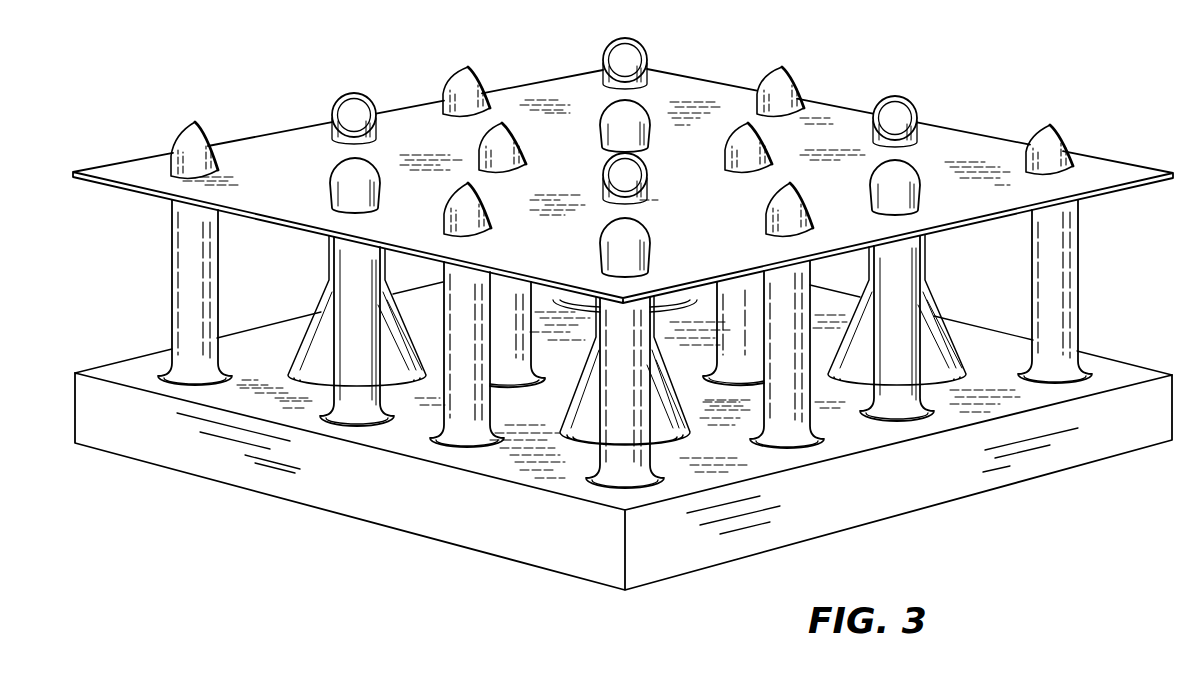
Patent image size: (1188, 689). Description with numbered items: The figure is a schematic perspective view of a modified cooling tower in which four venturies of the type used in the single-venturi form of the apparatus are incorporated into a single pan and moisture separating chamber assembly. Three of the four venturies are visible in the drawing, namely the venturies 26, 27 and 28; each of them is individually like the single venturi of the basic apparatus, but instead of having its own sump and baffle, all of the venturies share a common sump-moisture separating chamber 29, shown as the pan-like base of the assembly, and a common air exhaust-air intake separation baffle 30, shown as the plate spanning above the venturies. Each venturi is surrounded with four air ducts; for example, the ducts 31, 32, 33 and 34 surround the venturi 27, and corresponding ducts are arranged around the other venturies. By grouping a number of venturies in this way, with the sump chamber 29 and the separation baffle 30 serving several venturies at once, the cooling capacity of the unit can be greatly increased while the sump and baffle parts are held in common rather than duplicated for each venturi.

The venturi 26 is at (323, 340).
The venturi 27 is at (578, 398).
The venturi 28 is at (928, 345).
The common sump-moisture separating chamber 29 is at (917, 495).
The common air exhaust-air intake separation baffle 30 is at (698, 95).
The air duct 31 is at (457, 327).
The air duct 32 is at (650, 173).
The air duct 33 is at (632, 370).
The air duct 34 is at (797, 200).